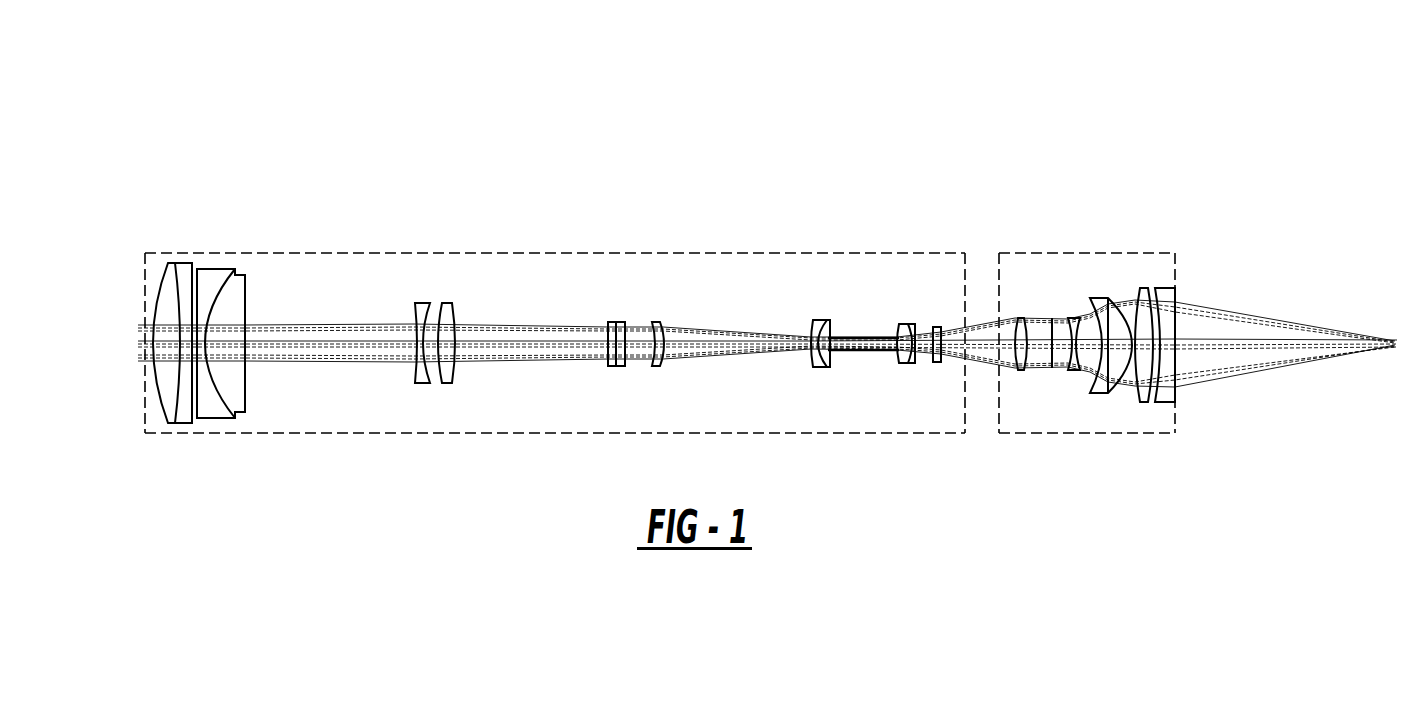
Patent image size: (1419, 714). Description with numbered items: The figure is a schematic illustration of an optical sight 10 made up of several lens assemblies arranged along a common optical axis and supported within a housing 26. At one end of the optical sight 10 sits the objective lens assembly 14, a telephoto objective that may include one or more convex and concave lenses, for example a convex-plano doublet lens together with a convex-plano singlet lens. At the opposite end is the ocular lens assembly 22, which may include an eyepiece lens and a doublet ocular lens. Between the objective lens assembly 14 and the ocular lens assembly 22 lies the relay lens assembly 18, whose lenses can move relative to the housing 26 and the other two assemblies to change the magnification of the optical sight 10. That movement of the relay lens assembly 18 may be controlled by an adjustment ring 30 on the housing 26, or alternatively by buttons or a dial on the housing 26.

The optical sight 10 is at (953, 87).
The objective lens assembly 14 is at (277, 282).
The relay lens assembly 18 is at (693, 278).
The ocular lens assembly 22 is at (1147, 272).
The housing 26 is at (558, 253).
The adjustment ring 30 is at (1000, 288).